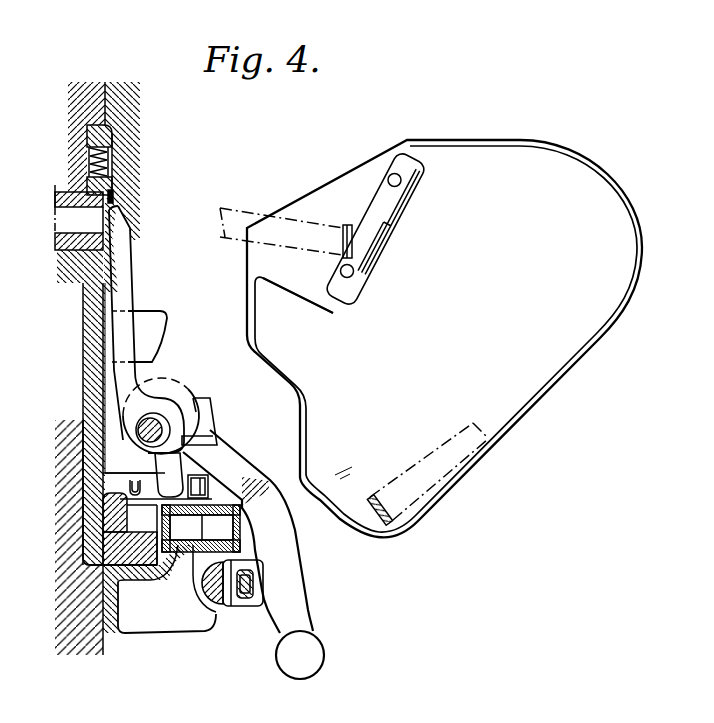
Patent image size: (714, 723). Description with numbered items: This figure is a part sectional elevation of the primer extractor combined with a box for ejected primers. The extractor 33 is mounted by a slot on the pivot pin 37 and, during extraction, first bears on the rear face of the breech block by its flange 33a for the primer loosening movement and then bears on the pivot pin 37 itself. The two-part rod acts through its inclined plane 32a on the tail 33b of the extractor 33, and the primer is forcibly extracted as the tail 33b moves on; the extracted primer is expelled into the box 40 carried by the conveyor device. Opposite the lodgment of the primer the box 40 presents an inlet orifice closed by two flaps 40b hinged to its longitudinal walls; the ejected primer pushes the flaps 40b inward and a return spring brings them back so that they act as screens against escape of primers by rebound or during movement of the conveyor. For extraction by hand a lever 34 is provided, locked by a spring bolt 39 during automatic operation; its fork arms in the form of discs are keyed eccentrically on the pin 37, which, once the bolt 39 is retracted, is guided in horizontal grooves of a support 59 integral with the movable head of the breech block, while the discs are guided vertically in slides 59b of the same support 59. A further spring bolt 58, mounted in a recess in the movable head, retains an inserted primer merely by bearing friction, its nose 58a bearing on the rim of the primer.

The inclined plane 32a is at (152, 479).
The extractor 33 is at (117, 262).
The flange 33a is at (107, 278).
The tail 33b is at (175, 482).
The lever 34 is at (292, 592).
The pivot pin 37 is at (151, 428).
The spring bolt 39 is at (216, 614).
The box 40 is at (541, 397).
The flaps 40b is at (362, 263).
The spring bolt 58 is at (107, 156).
The nose 58a is at (114, 198).
The support 59 is at (112, 387).
The slides 59b is at (204, 407).